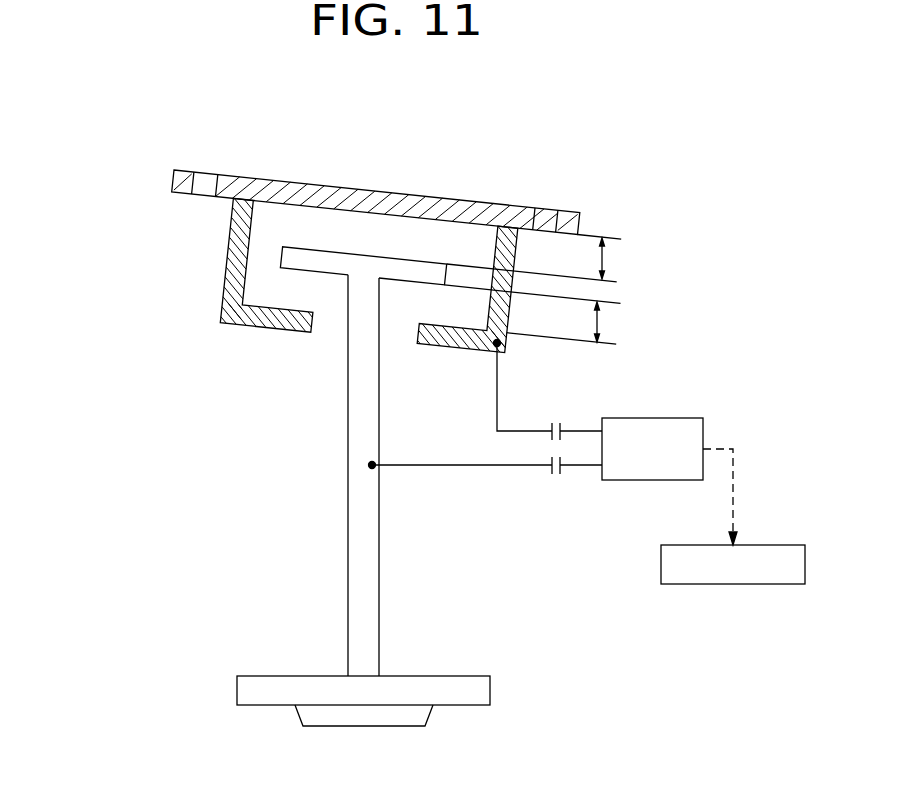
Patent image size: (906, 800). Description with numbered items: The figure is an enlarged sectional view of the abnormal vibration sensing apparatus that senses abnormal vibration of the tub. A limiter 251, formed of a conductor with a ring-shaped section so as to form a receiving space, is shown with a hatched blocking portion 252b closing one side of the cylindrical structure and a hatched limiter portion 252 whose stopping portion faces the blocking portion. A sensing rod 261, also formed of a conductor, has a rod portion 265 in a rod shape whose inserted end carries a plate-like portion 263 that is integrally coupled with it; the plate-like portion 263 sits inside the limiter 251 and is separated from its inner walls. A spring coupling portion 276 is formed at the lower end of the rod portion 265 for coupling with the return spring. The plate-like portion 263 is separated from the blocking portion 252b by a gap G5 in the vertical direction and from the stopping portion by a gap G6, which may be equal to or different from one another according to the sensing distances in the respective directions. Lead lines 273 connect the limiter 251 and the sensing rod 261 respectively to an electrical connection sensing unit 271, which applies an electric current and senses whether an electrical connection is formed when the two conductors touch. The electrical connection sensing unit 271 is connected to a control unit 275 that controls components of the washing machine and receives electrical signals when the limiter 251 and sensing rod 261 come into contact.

The limiter 251 is at (97, 143).
The blocking portion 252b is at (235, 185).
The limiter portion 252 is at (232, 250).
The sensing rod 261 is at (432, 128).
The plate-like portion 263 is at (315, 260).
The rod portion 265 is at (365, 345).
The electrical connection sensing unit 271 is at (667, 418).
The lead lines 273 is at (501, 466).
The control unit 275 is at (703, 584).
The spring coupling portion 276 is at (477, 690).
The gap G5 is at (540, 258).
The gap G6 is at (538, 314).